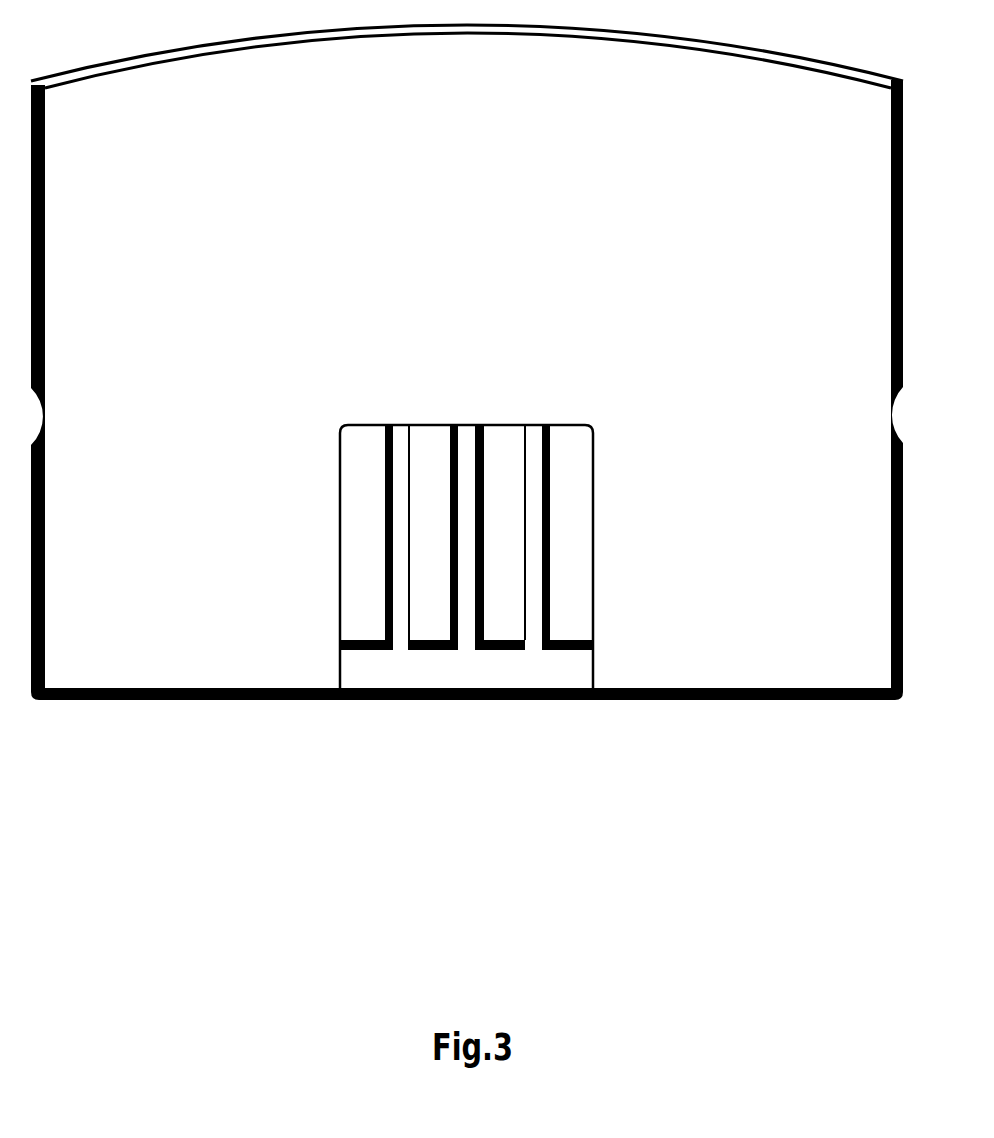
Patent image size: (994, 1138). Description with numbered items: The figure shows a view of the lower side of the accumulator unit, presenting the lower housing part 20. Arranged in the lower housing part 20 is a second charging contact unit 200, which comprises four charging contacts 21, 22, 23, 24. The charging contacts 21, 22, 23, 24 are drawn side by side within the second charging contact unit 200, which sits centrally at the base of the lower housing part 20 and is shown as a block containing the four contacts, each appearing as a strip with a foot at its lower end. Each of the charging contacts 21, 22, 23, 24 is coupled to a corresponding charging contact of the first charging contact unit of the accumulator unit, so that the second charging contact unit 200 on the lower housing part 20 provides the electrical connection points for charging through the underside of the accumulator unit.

The lower housing part 20 is at (815, 658).
The second charging contact unit 200 is at (467, 670).
The charging contact 21 is at (365, 623).
The charging contact 22 is at (429, 623).
The charging contact 23 is at (510, 623).
The charging contact 24 is at (573, 608).